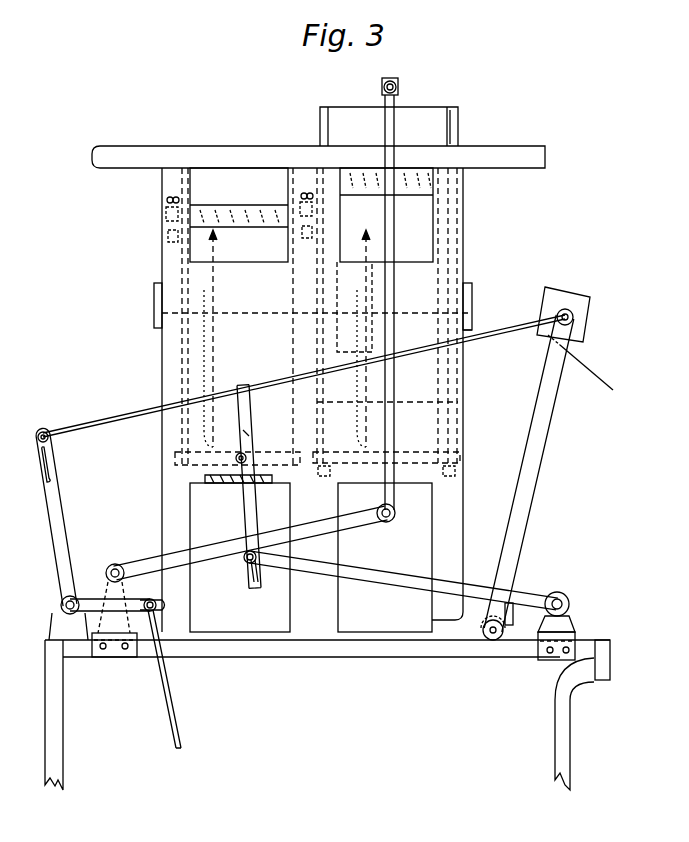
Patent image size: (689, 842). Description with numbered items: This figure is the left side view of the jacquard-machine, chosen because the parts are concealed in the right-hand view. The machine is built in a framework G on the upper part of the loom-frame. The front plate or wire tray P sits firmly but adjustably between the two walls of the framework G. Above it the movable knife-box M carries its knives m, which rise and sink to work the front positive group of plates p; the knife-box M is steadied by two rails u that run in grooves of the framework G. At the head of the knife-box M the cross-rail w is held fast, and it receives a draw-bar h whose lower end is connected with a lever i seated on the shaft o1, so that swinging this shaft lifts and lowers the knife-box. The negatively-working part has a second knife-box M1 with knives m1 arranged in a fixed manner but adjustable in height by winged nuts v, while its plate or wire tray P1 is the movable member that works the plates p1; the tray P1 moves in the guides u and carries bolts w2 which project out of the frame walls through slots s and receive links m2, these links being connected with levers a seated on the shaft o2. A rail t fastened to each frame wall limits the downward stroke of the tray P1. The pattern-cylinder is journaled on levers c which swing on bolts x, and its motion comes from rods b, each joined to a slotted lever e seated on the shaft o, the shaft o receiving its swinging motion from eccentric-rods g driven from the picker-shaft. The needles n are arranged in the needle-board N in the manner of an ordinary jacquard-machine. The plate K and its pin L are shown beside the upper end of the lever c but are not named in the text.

The framework G is at (449, 274).
The rails u is at (445, 130).
The knife-box M is at (458, 142).
The draw-bar h is at (394, 237).
The cross-rail w is at (398, 85).
The second knife-box M1 is at (245, 214).
The knives of second knife-box m1 is at (201, 216).
The plates of negative machine p1 is at (214, 244).
The knives m is at (372, 196).
The plates of positive machine p is at (363, 240).
The winged nuts v is at (166, 205).
The needle-board N is at (150, 294).
The needles n is at (473, 320).
The rods b is at (255, 382).
The slotted lever e is at (70, 520).
The shaft o is at (71, 590).
The shaft o1 is at (113, 568).
The shaft o2 is at (572, 604).
The lever i is at (300, 518).
The lever a is at (385, 576).
The lever c is at (558, 393).
The bolts x is at (490, 640).
The plate K is at (598, 299).
The pivot pin L is at (576, 296).
The rail t is at (270, 492).
The bolts w2 is at (235, 458).
The slots s is at (244, 432).
The movable plate or wire tray P1 is at (276, 450).
The front plate or wire tray P is at (402, 456).
The links m2 is at (241, 502).
The eccentric-rod g is at (160, 678).